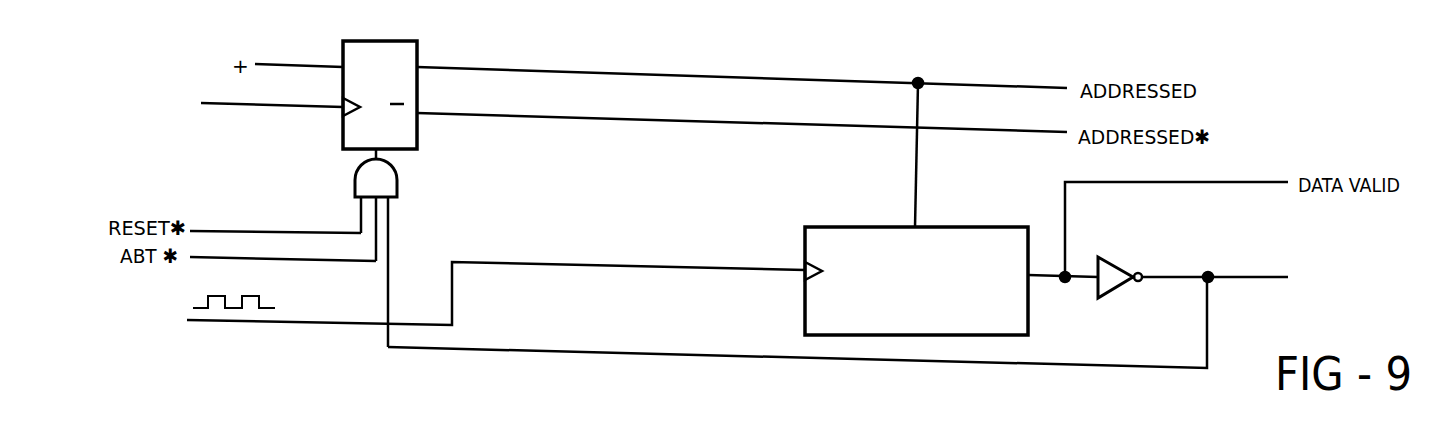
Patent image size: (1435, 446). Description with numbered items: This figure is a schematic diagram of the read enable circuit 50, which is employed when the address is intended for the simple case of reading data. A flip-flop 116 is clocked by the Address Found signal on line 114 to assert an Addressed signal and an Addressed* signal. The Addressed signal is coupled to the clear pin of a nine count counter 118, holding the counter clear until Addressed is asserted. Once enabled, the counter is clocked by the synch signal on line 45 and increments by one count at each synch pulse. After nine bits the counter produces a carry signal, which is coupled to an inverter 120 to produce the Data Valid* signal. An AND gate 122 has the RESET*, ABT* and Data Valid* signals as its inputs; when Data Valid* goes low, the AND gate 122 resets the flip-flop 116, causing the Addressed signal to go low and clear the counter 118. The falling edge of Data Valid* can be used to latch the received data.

The read enable circuit 50 is at (1320, 124).
The Address Found signal line 114 is at (292, 106).
The flip-flop 116 is at (417, 54).
The nine count counter 118 is at (972, 227).
The inverter 120 is at (1118, 262).
The AND gate 122 is at (397, 190).
The synch signal line 45 is at (245, 320).